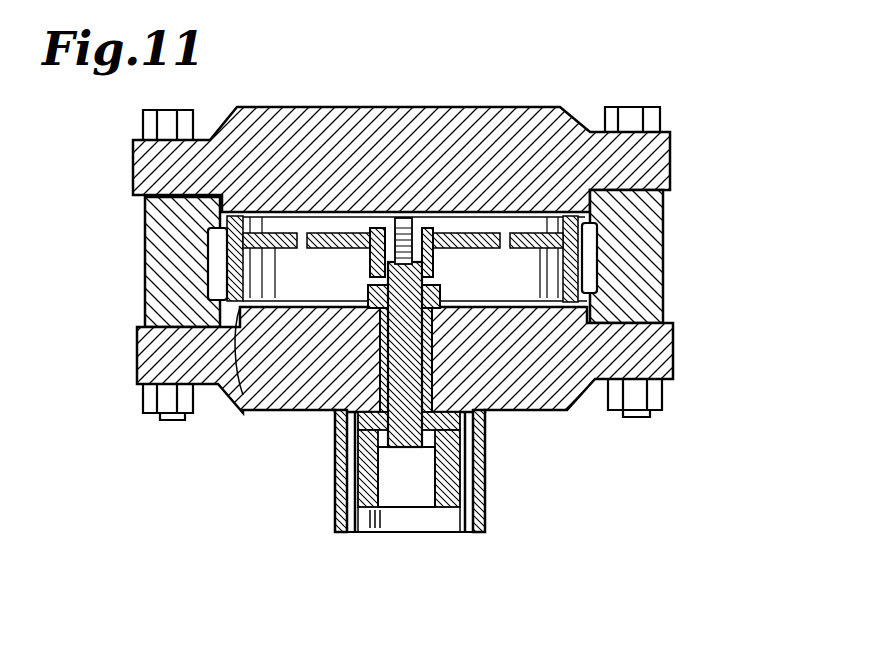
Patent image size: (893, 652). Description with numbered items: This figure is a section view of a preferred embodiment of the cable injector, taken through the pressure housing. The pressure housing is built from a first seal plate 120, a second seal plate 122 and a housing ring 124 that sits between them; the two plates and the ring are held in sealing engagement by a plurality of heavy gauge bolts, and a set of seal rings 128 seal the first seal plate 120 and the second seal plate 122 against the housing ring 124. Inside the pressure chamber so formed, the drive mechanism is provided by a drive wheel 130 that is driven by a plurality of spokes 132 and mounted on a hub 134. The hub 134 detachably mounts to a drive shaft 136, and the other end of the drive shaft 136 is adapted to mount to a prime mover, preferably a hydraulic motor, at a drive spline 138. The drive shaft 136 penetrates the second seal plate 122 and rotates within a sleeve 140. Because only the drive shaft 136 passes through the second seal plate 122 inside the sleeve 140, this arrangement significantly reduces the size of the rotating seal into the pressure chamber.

The first seal plate 120 is at (672, 154).
The second seal plate 122 is at (672, 358).
The housing ring 124 is at (665, 258).
The seal rings 128 is at (584, 222).
The drive wheel 130 is at (230, 392).
The spokes 132 is at (208, 240).
The hub 134 is at (437, 226).
The drive shaft 136 is at (318, 416).
The drive spline 138 is at (460, 491).
The sleeve 140 is at (486, 412).